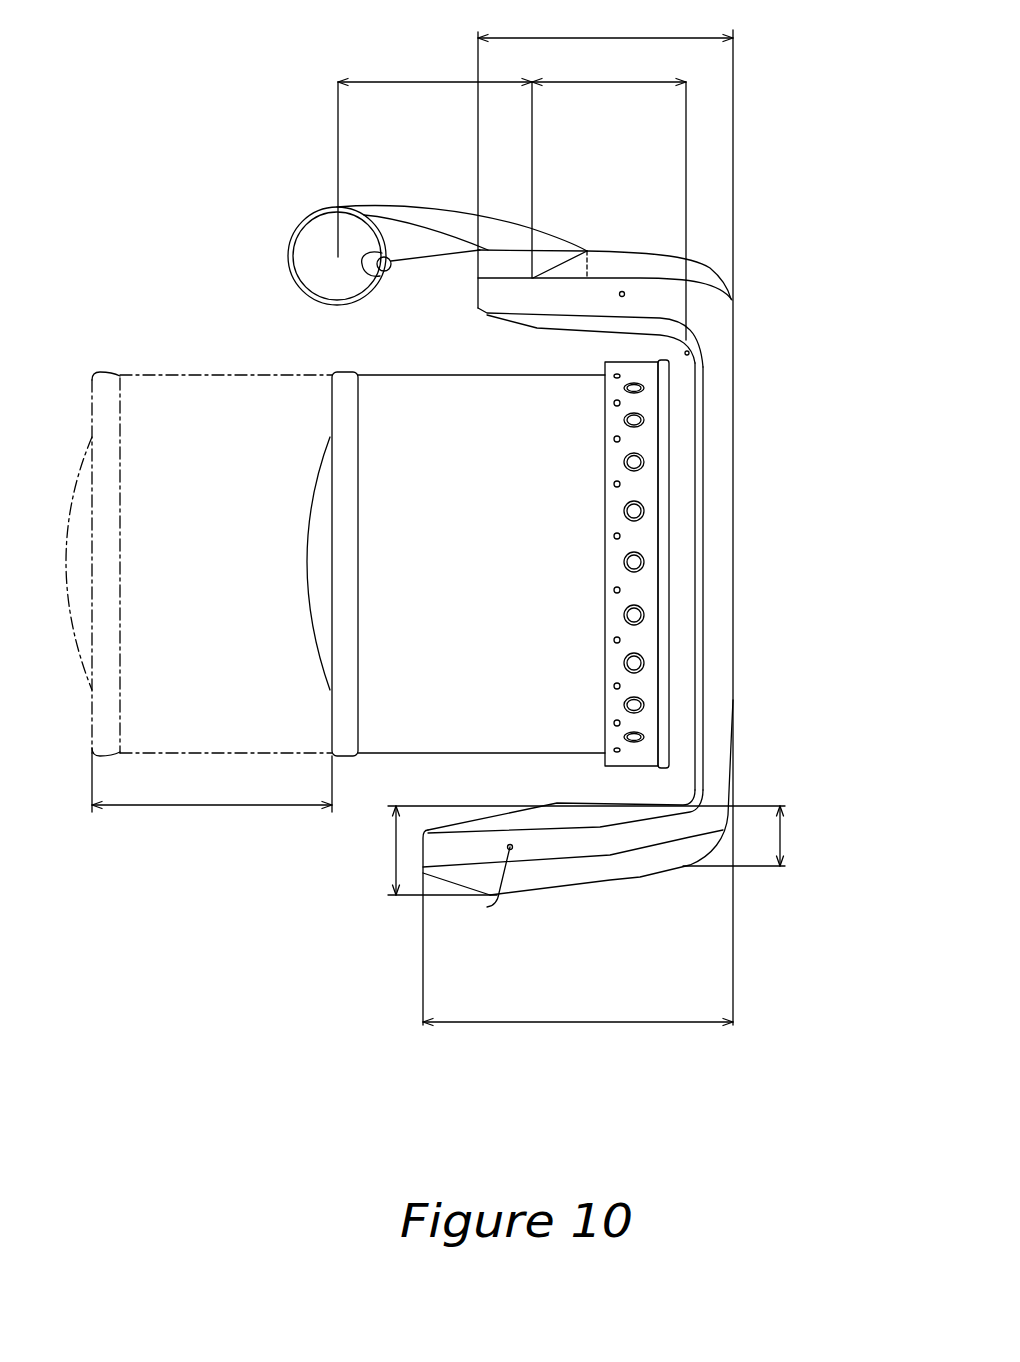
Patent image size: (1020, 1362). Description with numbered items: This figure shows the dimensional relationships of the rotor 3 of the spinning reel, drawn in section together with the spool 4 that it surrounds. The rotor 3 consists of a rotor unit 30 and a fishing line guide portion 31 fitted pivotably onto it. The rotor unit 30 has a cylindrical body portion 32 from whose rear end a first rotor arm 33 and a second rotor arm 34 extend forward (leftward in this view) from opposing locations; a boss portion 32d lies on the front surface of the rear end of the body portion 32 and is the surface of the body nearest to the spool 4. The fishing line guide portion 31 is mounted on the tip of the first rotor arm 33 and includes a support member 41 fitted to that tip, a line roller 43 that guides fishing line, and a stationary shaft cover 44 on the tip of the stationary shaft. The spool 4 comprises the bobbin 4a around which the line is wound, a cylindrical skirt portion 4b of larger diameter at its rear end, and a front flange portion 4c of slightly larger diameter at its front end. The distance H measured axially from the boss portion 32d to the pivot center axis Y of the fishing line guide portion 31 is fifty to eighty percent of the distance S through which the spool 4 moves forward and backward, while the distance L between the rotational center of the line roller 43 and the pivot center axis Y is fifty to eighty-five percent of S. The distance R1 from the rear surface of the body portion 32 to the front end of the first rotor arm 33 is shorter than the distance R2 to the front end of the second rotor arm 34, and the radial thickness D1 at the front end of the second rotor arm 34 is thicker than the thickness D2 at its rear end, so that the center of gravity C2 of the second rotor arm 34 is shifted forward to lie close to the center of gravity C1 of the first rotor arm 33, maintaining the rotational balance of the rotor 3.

The rotor 3 is at (632, 863).
The spool 4 is at (397, 765).
The bobbin 4a is at (512, 388).
The cylindrical skirt portion 4b is at (633, 357).
The front flange portion 4c is at (347, 382).
The rotor unit 30 is at (753, 744).
The fishing line guide portion 31 is at (365, 178).
The cylindrical body portion 32 is at (707, 822).
The boss portion 32d is at (687, 353).
The first rotor arm 33 is at (630, 272).
The second rotor arm 34 is at (568, 877).
The support member 41 is at (468, 222).
The line roller 43 is at (337, 213).
The stationary shaft cover 44 is at (312, 248).
The distance between rear surface of body portion and front end of first rotor arm R1 is at (605, 156).
The distance between rear surface of body portion and front end of second rotor arm R2 is at (578, 1010).
The distance between line roller center and pivot center axis L is at (435, 154).
The distance between body portion surface and pivot center axis H is at (609, 196).
The pivot center axis Y is at (533, 123).
The spool stroke distance S is at (212, 782).
The front end thickness of second rotor arm D1 is at (569, 850).
The rear end thickness of second rotor arm D2 is at (757, 836).
The center of gravity of first rotor arm C1 is at (622, 294).
The center of gravity of second rotor arm C2 is at (487, 907).